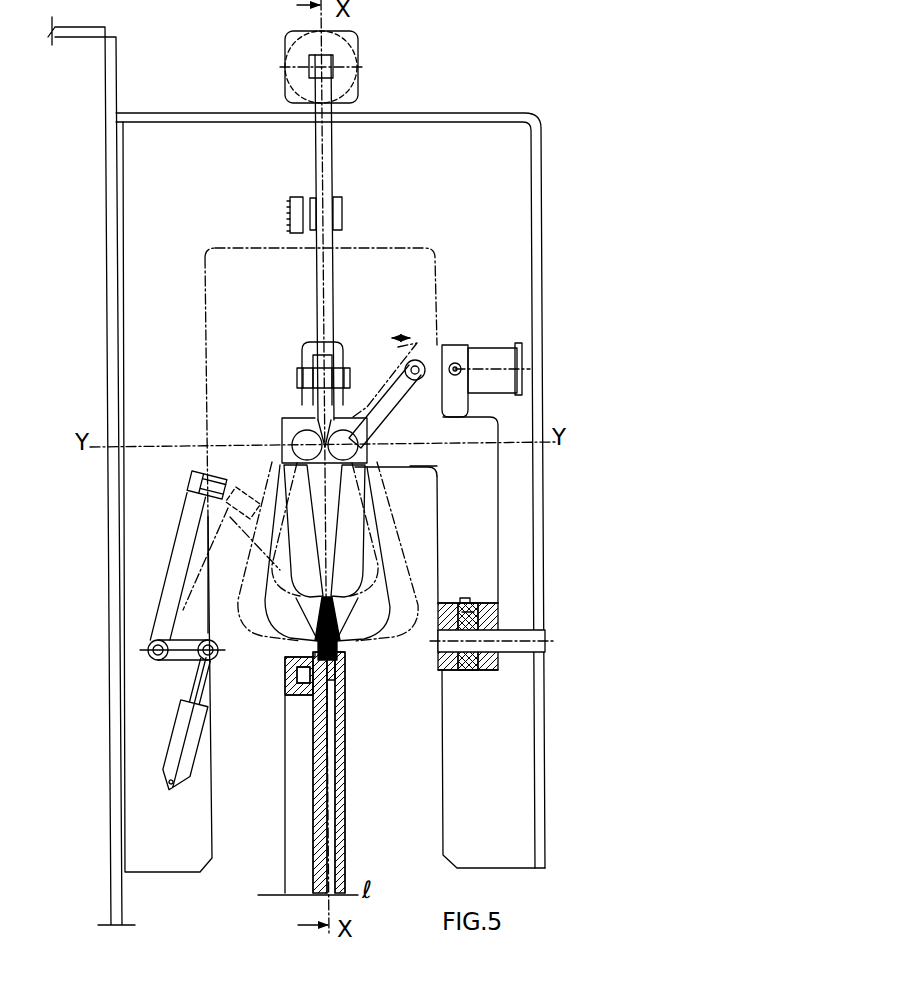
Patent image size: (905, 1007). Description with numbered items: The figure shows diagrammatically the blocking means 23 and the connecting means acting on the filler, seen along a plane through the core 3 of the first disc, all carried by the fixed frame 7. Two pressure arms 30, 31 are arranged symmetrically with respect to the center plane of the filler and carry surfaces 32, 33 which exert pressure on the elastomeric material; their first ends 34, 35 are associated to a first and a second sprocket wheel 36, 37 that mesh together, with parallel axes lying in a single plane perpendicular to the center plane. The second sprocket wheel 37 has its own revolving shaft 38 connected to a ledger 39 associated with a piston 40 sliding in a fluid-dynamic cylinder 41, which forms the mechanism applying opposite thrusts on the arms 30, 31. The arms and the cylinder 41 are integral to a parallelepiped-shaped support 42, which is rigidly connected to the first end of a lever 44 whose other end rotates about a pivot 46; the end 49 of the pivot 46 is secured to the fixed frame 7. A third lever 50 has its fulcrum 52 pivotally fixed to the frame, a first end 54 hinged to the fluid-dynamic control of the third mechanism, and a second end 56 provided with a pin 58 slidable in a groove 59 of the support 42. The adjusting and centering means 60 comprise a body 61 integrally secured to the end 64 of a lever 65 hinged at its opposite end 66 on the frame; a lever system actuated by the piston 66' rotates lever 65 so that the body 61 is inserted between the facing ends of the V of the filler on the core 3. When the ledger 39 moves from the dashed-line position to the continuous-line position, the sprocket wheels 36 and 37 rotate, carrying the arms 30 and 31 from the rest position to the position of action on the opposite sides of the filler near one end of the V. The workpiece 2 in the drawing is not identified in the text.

The fixed frame 7 is at (112, 62).
The first end of third lever 54 is at (338, 65).
The third lever 50 is at (325, 175).
The fulcrum 52 is at (344, 218).
The second end of third lever 56 is at (338, 344).
The groove 59 is at (308, 366).
The pin 58 is at (297, 385).
The first end of arm 34 is at (282, 462).
The revolving shaft 38 is at (313, 427).
The first sprocket wheel 36 is at (305, 452).
The second sprocket wheel 37 is at (352, 448).
The ledger 39 is at (383, 410).
The piston 40 is at (443, 345).
The fluid-dynamic cylinder 41 is at (500, 376).
The support 42 is at (410, 463).
The blocking means 23 is at (402, 508).
The lever 44 is at (478, 542).
The first end of arm 35 is at (410, 467).
The pivot 46 is at (520, 647).
The end of pivot 49 is at (533, 633).
The arm 30 is at (290, 493).
The arm 31 is at (360, 488).
The pressure surface 32 is at (317, 640).
The pressure surface 33 is at (337, 640).
The workpiece 2 is at (333, 600).
The core 3 is at (343, 660).
The adjusting and centering means 60 is at (200, 469).
The body 61 is at (195, 478).
The end of lever 64 is at (195, 498).
The lever 65 is at (185, 533).
The hinge 66 is at (178, 683).
The piston 66' is at (206, 724).